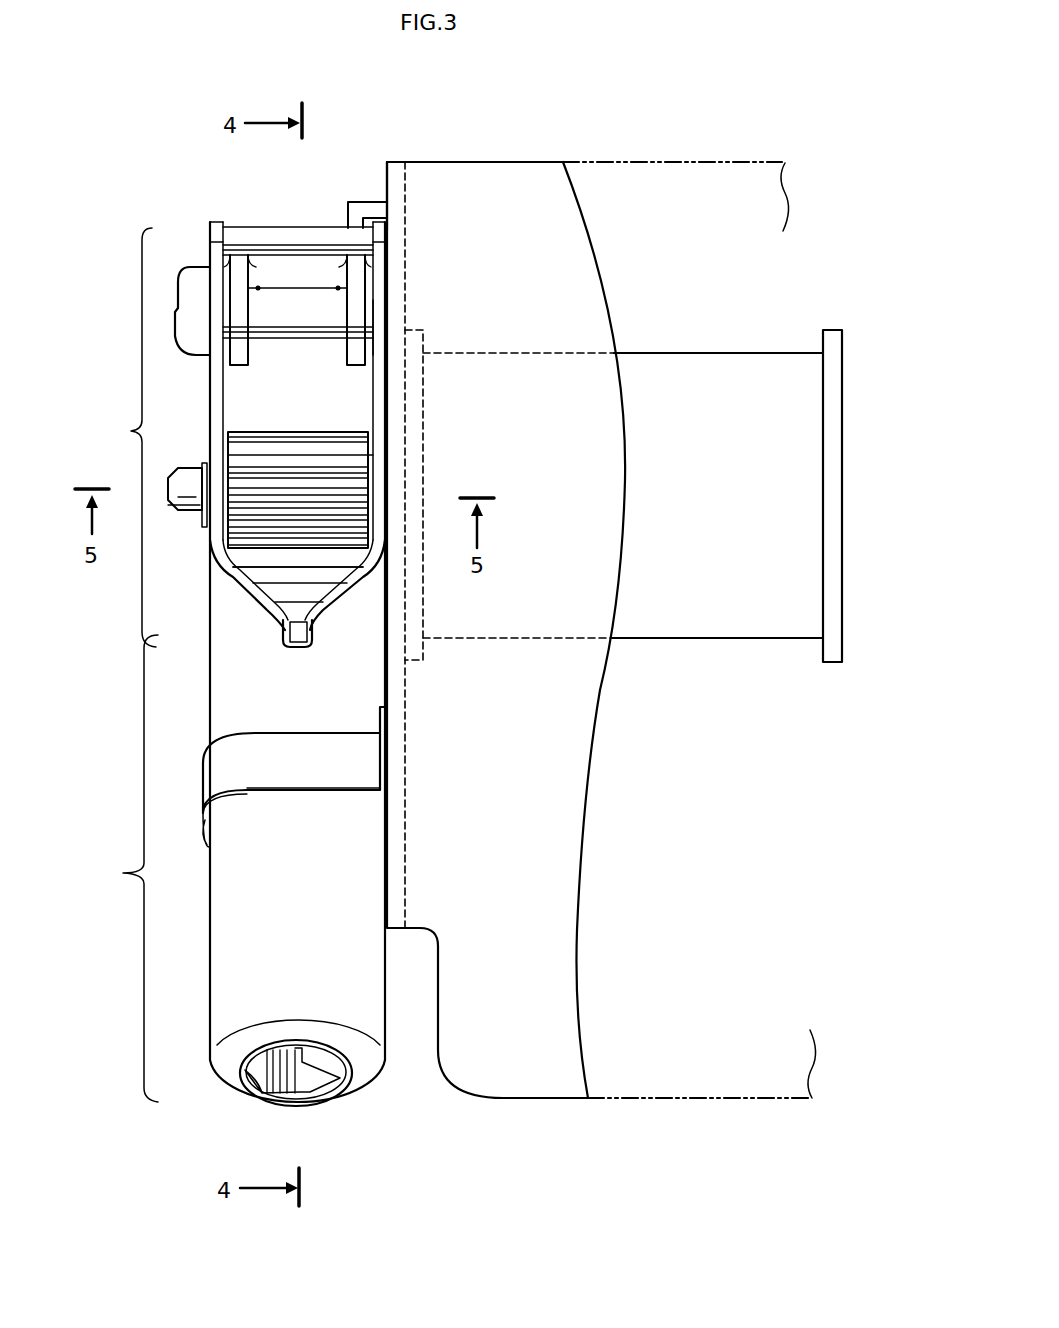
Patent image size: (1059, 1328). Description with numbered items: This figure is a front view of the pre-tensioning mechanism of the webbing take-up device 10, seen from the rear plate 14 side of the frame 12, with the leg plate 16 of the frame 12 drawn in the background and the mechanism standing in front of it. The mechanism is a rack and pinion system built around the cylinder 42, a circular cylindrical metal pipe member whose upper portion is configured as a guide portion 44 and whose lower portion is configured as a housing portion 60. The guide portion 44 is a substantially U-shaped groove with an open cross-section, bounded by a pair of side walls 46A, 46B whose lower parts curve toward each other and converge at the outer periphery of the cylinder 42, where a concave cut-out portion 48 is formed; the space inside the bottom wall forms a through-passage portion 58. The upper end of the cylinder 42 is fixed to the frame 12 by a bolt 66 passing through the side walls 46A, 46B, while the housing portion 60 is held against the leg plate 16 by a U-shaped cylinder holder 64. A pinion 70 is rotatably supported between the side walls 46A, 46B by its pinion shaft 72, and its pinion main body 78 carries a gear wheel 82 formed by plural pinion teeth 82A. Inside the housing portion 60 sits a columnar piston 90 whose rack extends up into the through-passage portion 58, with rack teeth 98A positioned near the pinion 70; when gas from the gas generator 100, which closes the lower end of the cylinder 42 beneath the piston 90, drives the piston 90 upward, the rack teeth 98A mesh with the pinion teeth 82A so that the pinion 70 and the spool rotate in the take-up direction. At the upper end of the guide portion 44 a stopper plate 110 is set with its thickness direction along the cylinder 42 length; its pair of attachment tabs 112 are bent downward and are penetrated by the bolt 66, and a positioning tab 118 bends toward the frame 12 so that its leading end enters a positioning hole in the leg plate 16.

The webbing take-up device 10 is at (567, 116).
The frame 12 is at (472, 162).
The rear plate 14 is at (543, 1100).
The leg plate 16 is at (387, 178).
The cylinder 42 is at (388, 1061).
The guide portion 44 is at (131, 431).
The side wall 46A is at (368, 378).
The side wall 46B is at (226, 390).
The cut-out portion 48 is at (300, 655).
The through-passage portion 58 is at (311, 413).
The housing portion 60 is at (123, 873).
The cylinder holder 64 is at (350, 732).
The bolt 66 is at (183, 272).
The pinion 70 is at (346, 507).
The pinion shaft 72 is at (178, 509).
The pinion main body 78 is at (357, 433).
The gear wheel 82 is at (384, 519).
The pinion teeth 82A is at (348, 465).
The piston 90 is at (343, 577).
The rack teeth 98A is at (322, 588).
The gas generator 100 is at (246, 1095).
The stopper plate 110 is at (367, 353).
The attachment tabs 112 is at (365, 304).
The positioning tab 118 is at (367, 202).